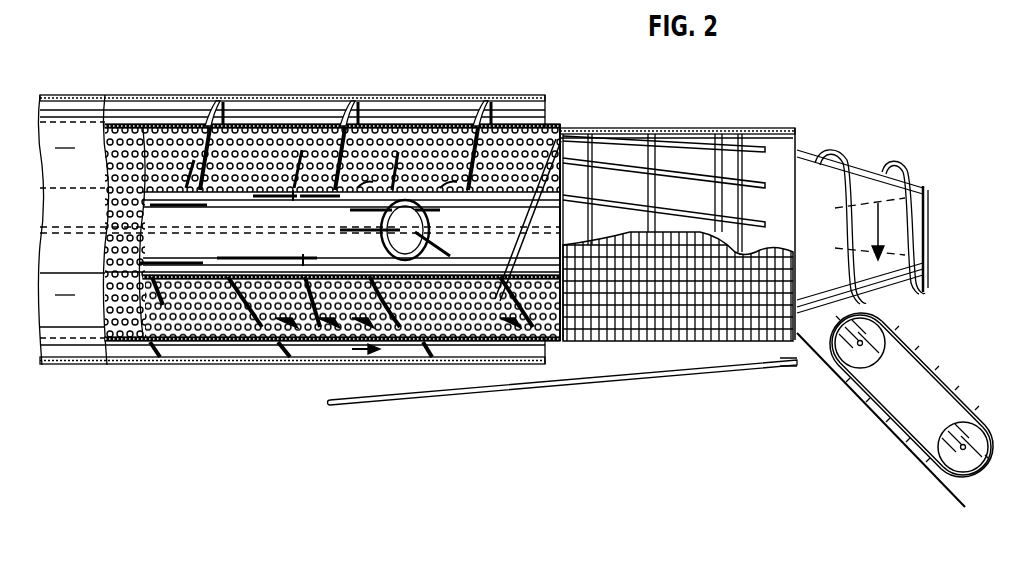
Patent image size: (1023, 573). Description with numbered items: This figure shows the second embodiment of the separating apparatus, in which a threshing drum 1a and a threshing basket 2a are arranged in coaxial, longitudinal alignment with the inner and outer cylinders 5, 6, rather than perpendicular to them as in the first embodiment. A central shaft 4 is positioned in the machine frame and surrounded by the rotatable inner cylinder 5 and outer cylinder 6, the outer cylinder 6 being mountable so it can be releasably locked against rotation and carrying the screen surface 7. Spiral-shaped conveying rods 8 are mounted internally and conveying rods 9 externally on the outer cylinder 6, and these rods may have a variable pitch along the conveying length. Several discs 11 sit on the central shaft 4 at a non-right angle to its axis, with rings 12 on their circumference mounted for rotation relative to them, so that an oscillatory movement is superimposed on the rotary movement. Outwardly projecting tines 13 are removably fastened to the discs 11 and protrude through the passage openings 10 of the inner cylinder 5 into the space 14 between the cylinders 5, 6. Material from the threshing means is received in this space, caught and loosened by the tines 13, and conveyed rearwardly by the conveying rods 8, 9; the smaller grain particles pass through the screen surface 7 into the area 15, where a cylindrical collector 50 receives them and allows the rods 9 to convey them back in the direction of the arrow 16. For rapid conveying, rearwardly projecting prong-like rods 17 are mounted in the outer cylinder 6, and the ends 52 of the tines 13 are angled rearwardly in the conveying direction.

The threshing drum 1a is at (657, 165).
The threshing basket 2a is at (622, 320).
The central shaft 4 is at (477, 233).
The inner cylinder 5 is at (222, 207).
The outer cylinder 6 is at (553, 125).
The screen surface 7 is at (120, 327).
The internally mounted conveying rods 8 is at (233, 297).
The externally mounted conveying rods 9 is at (290, 343).
The passage openings 10 is at (257, 257).
The discs 11 is at (383, 240).
The rings 12 is at (430, 247).
The tines 13 is at (528, 125).
The space between the cylinders 14 is at (180, 315).
The area 15 is at (243, 350).
The arrow 16 is at (327, 347).
The prong-like rods 17 is at (420, 183).
The cylindrical collector 50 is at (373, 363).
The ends of the tines 52 is at (592, 130).